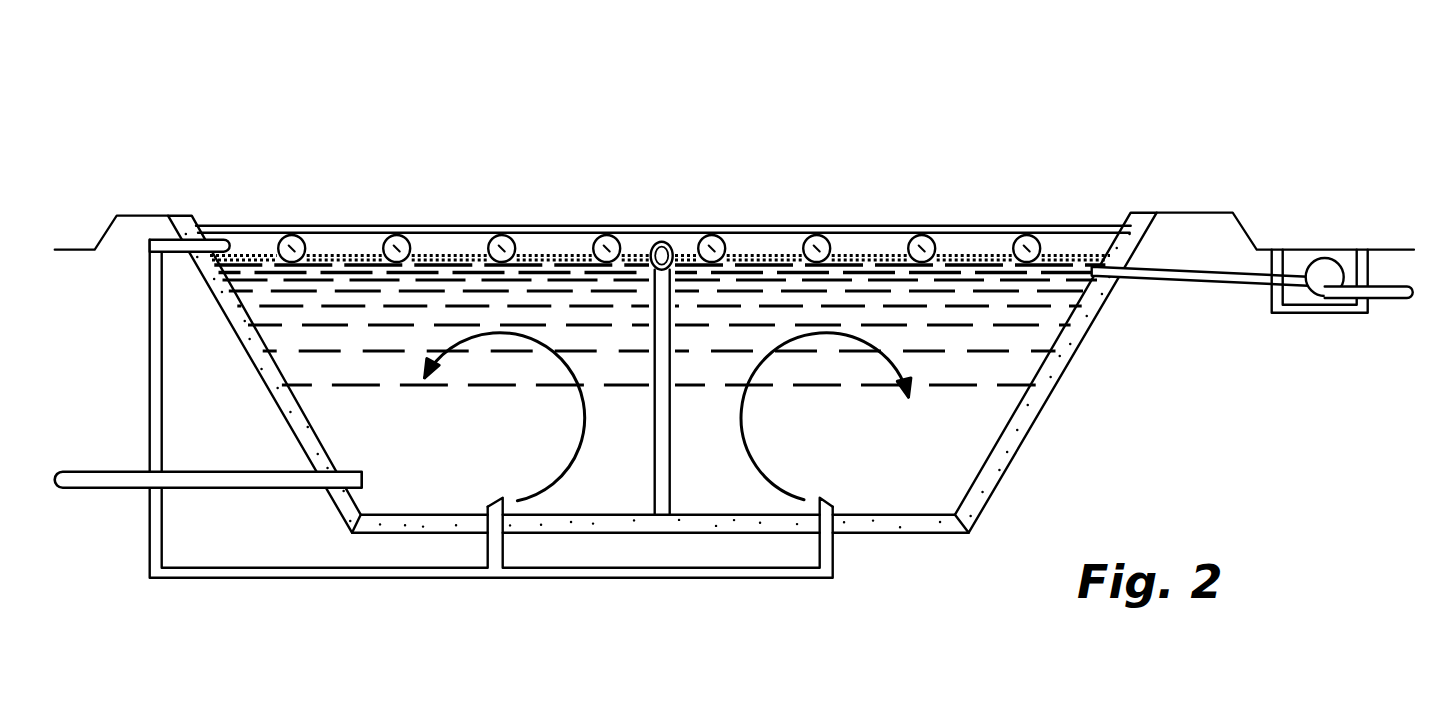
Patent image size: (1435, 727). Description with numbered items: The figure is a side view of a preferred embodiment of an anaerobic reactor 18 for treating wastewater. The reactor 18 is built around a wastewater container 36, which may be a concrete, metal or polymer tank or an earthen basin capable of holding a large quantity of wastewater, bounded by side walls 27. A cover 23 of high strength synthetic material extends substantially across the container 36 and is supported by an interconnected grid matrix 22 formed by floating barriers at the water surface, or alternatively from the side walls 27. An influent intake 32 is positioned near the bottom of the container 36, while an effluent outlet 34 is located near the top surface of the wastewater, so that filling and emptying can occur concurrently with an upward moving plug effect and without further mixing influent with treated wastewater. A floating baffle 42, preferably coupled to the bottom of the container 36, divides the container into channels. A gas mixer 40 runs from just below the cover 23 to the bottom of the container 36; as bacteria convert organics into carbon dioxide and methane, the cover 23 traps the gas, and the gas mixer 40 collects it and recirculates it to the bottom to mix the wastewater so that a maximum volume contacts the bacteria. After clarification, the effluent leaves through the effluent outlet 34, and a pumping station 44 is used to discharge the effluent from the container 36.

The reactor 18 is at (194, 132).
The grid matrix 22 is at (999, 219).
The cover 23 is at (445, 217).
The side walls 27 is at (265, 399).
The influent intake 32 is at (87, 465).
The effluent outlet 34 is at (1084, 257).
The wastewater container 36 is at (1014, 414).
The gas mixer 40 is at (142, 322).
The floating baffle 42 is at (632, 217).
The pumping station 44 is at (1315, 238).